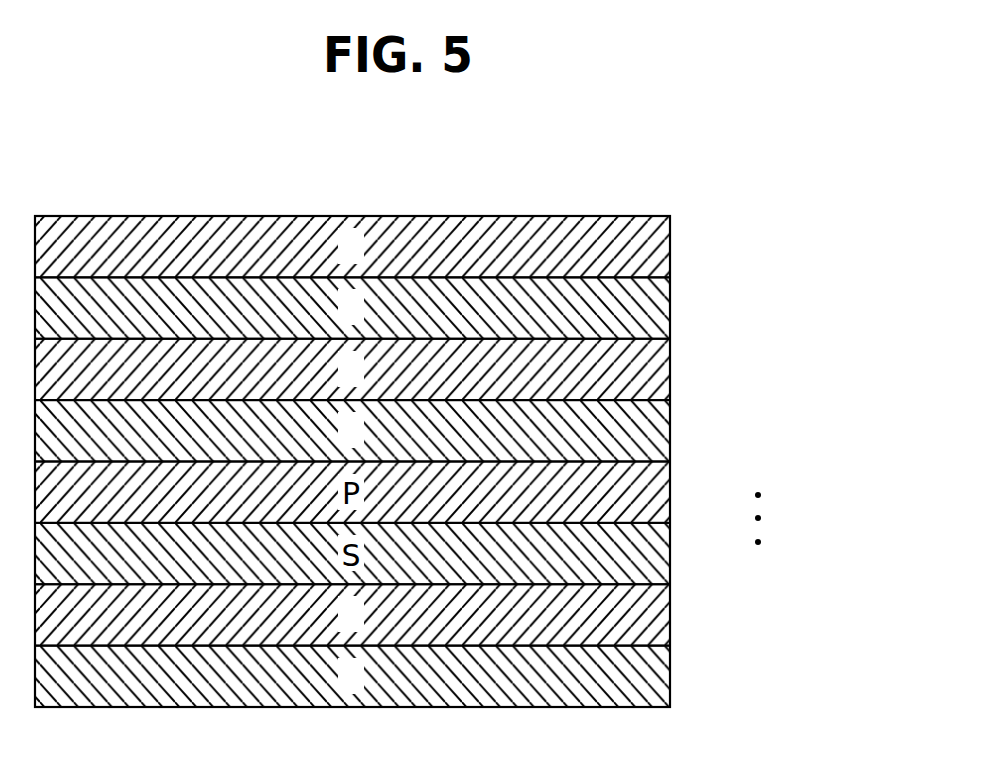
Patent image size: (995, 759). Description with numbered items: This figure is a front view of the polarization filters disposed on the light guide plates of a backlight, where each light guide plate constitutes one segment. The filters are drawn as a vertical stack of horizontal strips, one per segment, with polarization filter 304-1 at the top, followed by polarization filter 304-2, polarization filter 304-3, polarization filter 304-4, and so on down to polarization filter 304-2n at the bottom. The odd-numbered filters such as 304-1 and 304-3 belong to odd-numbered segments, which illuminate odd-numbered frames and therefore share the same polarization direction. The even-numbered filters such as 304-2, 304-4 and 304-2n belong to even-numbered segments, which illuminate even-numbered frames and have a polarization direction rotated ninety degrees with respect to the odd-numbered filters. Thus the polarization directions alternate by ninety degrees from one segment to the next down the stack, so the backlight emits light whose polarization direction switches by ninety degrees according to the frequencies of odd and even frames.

The polarization filter 304-1 is at (655, 247).
The polarization filter 304-2 is at (655, 308).
The polarization filter 304-3 is at (655, 371).
The polarization filter 304-4 is at (655, 431).
The polarization filter 304-2n is at (655, 677).